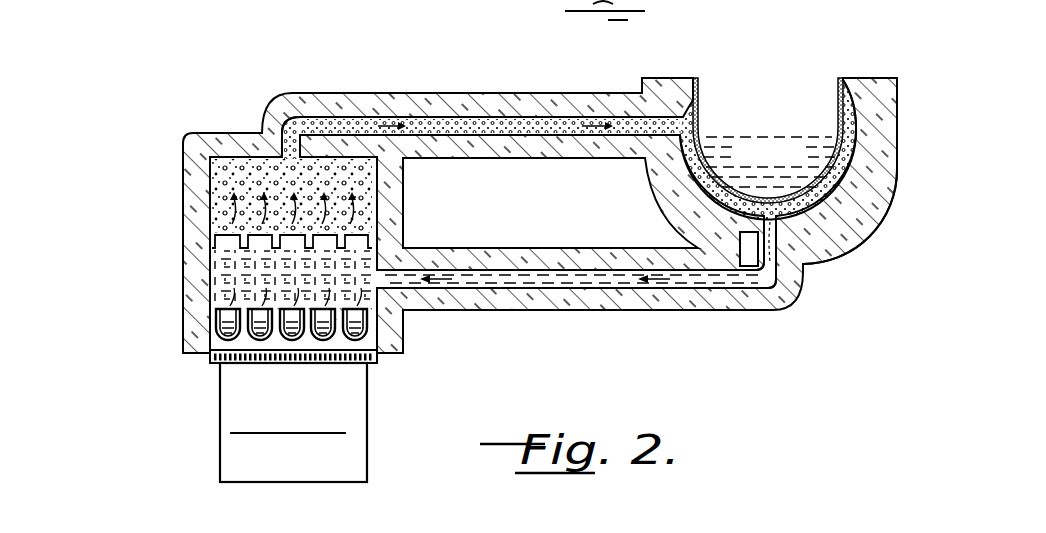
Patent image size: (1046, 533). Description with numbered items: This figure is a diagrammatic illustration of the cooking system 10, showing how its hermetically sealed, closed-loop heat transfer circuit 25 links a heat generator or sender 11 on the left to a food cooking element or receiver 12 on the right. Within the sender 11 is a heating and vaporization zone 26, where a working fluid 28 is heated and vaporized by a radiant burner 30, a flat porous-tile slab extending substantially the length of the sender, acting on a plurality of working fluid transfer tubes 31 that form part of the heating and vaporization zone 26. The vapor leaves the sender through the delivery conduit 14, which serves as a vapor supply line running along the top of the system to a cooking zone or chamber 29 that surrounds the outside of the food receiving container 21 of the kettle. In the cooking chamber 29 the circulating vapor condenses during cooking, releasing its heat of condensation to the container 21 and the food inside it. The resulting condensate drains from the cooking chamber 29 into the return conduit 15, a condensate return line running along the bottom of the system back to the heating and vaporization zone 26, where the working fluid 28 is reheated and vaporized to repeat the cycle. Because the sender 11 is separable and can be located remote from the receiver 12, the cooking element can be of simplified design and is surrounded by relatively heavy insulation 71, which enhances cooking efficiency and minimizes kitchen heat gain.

The cooking system 10 is at (318, 66).
The sender 11 is at (222, 128).
The receiver 12 is at (803, 57).
The delivery conduit 14 is at (626, 122).
The return conduit 15 is at (480, 283).
The food receiving container 21 is at (700, 103).
The closed loop heat transfer circuit 25 is at (292, 108).
The heating and vaporization zone 26 is at (200, 188).
The working fluid 28 is at (763, 278).
The cooking zone or chamber 29 is at (830, 183).
The radiant burner 30 is at (222, 420).
The working fluid transfer tubes 31 is at (213, 318).
The insulation 71 is at (897, 120).